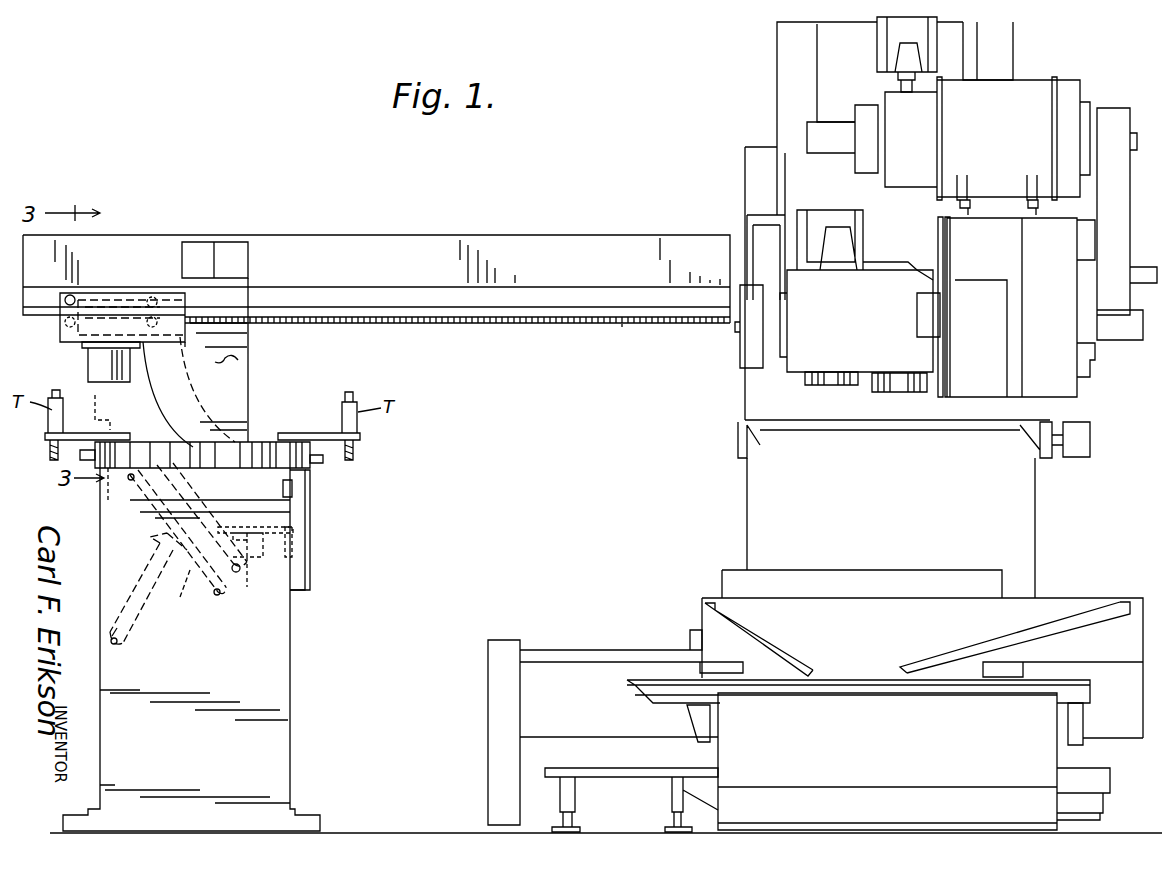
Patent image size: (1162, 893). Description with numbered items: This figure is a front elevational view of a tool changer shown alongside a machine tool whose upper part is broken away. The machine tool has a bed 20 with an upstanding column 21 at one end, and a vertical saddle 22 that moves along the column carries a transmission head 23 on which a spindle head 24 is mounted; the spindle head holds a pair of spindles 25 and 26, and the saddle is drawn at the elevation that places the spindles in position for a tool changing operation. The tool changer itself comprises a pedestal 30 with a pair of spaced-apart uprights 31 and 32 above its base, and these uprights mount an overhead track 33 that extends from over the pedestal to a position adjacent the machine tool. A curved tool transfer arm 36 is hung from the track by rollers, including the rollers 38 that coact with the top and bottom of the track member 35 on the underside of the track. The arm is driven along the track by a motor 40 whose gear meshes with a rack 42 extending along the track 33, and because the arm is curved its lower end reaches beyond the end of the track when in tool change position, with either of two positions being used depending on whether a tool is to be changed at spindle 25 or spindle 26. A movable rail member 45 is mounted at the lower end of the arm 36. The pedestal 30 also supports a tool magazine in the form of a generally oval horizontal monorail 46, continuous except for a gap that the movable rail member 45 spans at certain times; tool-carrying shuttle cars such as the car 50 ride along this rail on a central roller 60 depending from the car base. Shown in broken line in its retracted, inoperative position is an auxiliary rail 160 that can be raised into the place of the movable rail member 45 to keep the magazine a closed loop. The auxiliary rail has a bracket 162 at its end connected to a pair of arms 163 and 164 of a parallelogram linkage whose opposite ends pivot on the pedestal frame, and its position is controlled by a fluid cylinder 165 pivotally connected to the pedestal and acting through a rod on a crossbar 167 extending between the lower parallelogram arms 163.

The bed 20 is at (898, 756).
The column 21 is at (1005, 42).
The vertical saddle 22 is at (760, 181).
The transmission head 23 is at (1050, 380).
The spindle head 24 is at (860, 336).
The spindle 25 is at (830, 387).
The spindle 26 is at (902, 392).
The pedestal 30 is at (300, 645).
The upright 31 is at (235, 256).
The upright 32 is at (240, 360).
The overhead track 33 is at (543, 243).
The track member 35 is at (585, 308).
The tool transfer arm 36 is at (165, 400).
The rollers 38 is at (160, 295).
The motor 40 is at (95, 361).
The rack 42 is at (623, 324).
The movable rail member 45 is at (318, 462).
The horizontal monorail 46 is at (230, 450).
The shuttle car 50 is at (325, 445).
The central roller 60 is at (318, 465).
The auxiliary rail 160 is at (240, 590).
The bracket 162 is at (230, 600).
The arm 163 is at (198, 585).
The arm 164 is at (200, 503).
The fluid cylinder 165 is at (155, 640).
The crossbar 167 is at (168, 541).